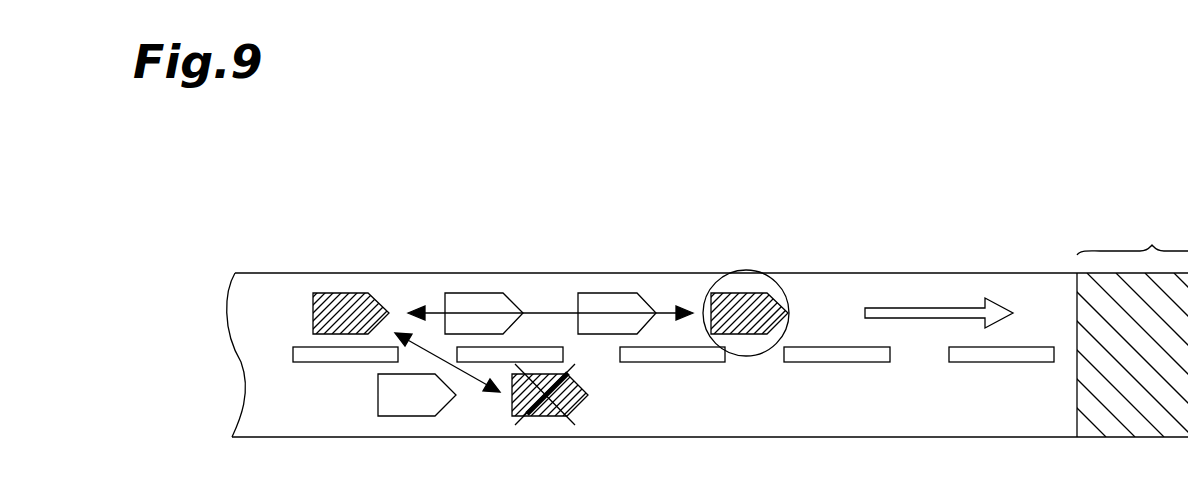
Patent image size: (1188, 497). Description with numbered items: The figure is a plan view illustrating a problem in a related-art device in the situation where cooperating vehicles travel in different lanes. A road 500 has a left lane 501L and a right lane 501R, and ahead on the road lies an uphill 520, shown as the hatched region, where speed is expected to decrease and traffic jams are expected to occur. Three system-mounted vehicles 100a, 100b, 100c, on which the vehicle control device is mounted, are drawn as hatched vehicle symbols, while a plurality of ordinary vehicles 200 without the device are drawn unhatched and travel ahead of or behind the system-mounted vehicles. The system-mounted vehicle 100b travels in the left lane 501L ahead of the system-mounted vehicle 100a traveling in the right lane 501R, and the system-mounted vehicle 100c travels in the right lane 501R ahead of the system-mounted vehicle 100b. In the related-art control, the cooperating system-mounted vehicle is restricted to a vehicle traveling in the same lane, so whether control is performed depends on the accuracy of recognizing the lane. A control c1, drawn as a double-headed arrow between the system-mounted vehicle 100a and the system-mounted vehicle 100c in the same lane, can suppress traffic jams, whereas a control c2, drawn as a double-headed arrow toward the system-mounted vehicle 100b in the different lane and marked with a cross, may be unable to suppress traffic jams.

The system-mounted vehicle 100a is at (347, 293).
The system-mounted vehicle 100b is at (548, 417).
The system-mounted vehicle 100c is at (745, 293).
The ordinary vehicle 200 is at (612, 293).
The road 500 is at (1018, 290).
The uphill 520 is at (1050, 327).
The left lane 501L is at (253, 307).
The right lane 501R is at (258, 392).
The control c1 is at (540, 313).
The control c2 is at (460, 373).